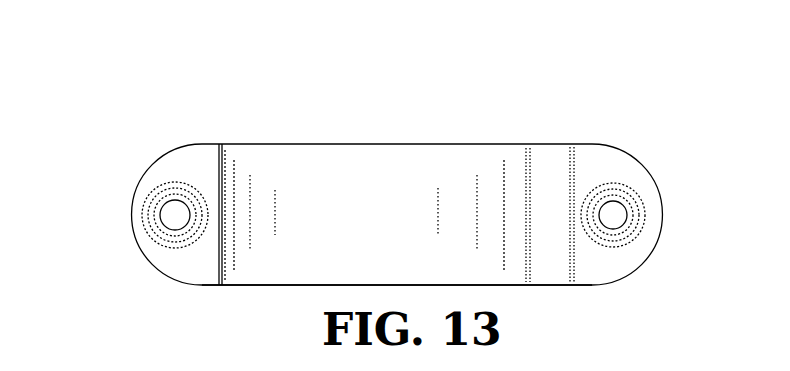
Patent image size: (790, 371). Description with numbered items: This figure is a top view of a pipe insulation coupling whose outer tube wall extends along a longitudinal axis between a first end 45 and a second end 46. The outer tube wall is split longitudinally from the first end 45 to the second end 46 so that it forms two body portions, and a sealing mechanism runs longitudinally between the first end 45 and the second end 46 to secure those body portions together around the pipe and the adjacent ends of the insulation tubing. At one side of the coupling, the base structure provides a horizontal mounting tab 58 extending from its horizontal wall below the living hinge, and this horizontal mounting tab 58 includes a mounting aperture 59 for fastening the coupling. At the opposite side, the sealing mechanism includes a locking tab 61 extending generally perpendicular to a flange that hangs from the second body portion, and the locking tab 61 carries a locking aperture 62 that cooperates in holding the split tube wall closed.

The first end 45 is at (498, 285).
The second end 46 is at (388, 143).
The horizontal mounting tab 58 is at (198, 160).
The mounting aperture 59 is at (175, 212).
The locking tab 61 is at (593, 163).
The locking aperture 62 is at (612, 217).